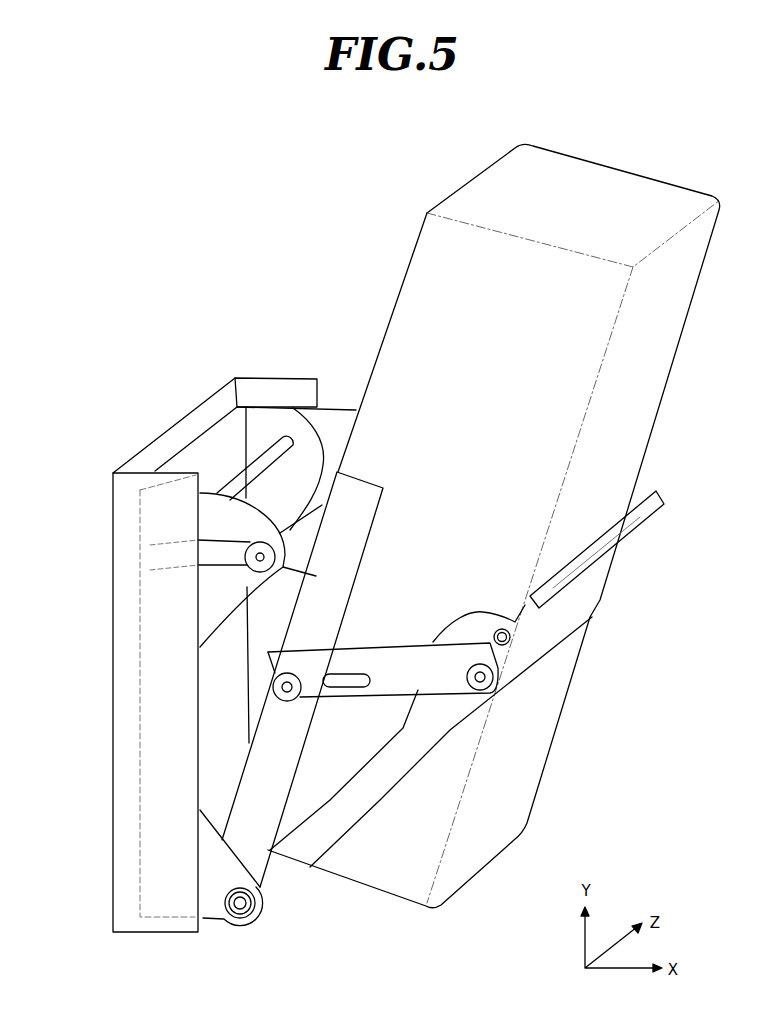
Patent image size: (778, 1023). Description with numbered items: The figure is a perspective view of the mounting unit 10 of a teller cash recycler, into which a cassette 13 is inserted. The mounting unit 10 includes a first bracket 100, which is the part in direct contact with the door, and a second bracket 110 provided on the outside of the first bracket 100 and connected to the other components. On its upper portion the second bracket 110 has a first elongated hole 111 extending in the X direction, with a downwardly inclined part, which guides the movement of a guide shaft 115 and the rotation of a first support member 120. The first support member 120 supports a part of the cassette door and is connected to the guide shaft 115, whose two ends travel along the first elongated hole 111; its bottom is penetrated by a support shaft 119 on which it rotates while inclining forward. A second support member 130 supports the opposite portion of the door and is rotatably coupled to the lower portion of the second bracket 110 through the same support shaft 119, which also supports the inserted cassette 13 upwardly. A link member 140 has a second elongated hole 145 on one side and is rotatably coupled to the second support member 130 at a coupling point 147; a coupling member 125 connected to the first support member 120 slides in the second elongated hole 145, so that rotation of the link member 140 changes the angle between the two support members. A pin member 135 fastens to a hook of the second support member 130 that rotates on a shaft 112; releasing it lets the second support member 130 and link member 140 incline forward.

The mounting unit 10 is at (104, 410).
The cassette 13 is at (622, 180).
The first bracket 100 is at (147, 463).
The second bracket 110 is at (223, 438).
The first elongated hole 111 is at (210, 553).
The shaft 112 is at (270, 460).
The guide shaft 115 is at (323, 493).
The support shaft 119 is at (266, 892).
The first support member 120 is at (355, 493).
The coupling member 125 is at (273, 678).
The second support member 130 is at (602, 583).
The pin member 135 is at (510, 635).
The link member 140 is at (398, 675).
The second elongated hole 145 is at (299, 700).
The coupling point 147 is at (493, 677).